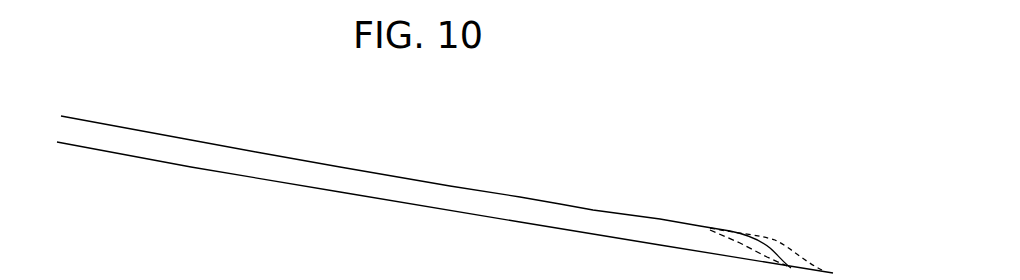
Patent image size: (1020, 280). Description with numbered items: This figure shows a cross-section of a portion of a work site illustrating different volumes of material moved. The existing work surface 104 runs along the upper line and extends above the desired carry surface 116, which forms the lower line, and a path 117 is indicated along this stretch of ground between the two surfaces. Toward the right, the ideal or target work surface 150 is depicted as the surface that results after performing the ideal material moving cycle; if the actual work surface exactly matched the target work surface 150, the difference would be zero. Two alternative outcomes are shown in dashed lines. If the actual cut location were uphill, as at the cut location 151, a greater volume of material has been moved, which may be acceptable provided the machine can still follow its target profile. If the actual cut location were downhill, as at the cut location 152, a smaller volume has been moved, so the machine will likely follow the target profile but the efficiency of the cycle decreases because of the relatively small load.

The work surface 104 is at (254, 152).
The desired carry surface 116 is at (191, 166).
The path 117 is at (402, 148).
The target work surface 150 is at (770, 247).
The uphill cut location 151 is at (728, 240).
The downhill cut location 152 is at (798, 257).